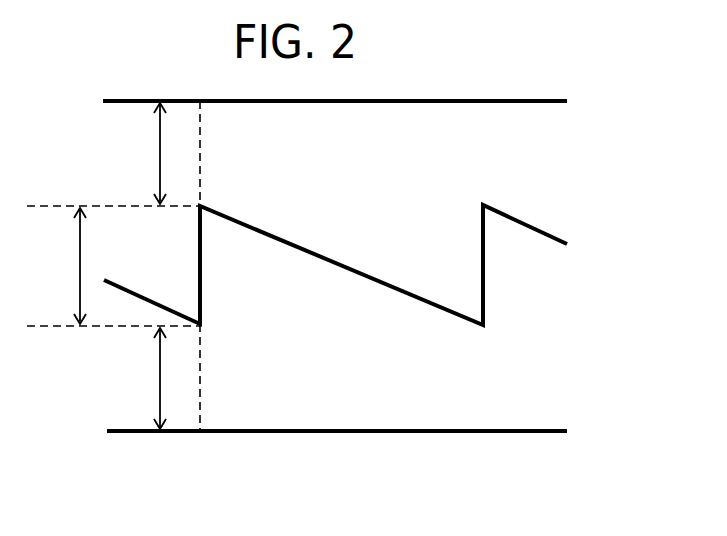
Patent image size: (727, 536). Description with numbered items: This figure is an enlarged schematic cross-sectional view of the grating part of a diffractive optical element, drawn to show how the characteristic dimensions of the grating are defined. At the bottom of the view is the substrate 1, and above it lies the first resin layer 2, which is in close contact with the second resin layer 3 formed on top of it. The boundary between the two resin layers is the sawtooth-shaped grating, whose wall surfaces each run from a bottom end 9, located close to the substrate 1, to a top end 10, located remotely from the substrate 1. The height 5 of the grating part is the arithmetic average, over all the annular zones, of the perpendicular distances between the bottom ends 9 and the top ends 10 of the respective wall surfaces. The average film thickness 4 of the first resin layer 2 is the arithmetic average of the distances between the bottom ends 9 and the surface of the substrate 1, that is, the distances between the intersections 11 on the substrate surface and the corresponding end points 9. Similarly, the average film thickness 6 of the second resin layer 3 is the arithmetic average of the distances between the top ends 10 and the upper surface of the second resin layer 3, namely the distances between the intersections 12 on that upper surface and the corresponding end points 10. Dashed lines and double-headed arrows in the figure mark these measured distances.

The substrate 1 is at (582, 455).
The first resin layer 2 is at (580, 375).
The second resin layer 3 is at (586, 131).
The average film thickness of the first resin layer 4 is at (154, 374).
The height of the grating part 5 is at (76, 262).
The average film thickness of the second resin layer 6 is at (154, 148).
The bottom end of wall surface 9 is at (203, 324).
The top end of wall surface 10 is at (201, 206).
The intersection with substrate surface 11 is at (201, 428).
The intersection with upper surface of second resin layer 12 is at (201, 103).